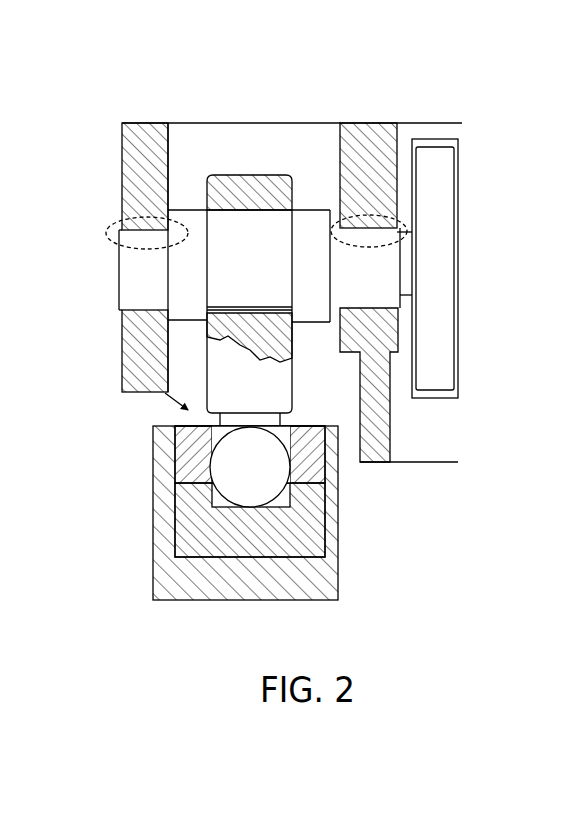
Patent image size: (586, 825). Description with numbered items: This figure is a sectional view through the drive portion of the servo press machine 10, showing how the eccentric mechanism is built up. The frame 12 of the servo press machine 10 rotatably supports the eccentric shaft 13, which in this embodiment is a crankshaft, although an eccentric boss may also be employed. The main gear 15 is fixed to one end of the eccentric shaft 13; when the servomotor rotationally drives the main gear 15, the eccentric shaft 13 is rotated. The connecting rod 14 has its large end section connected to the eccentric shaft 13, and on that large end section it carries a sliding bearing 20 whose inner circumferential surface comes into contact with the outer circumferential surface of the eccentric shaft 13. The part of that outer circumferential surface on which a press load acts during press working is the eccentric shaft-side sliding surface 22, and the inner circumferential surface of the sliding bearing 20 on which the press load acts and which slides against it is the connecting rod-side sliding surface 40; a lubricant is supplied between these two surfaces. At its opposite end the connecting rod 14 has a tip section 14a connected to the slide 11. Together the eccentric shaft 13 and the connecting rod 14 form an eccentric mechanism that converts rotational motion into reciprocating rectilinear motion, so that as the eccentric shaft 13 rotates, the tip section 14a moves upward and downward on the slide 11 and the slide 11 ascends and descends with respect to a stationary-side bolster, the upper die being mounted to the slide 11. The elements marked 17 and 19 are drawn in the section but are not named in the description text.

The servo press machine 10 is at (457, 93).
The slide 11 is at (338, 527).
The frame 12 is at (333, 127).
The eccentric shaft 13 is at (118, 256).
The connecting rod 14 is at (273, 386).
The tip section 14a is at (278, 463).
The main gear 15 is at (453, 228).
The holder 17 is at (153, 460).
The lower housing wall 19 is at (120, 356).
The sliding bearing 20 is at (290, 173).
The eccentric shaft-side sliding surface 22 is at (293, 336).
The connecting rod-side sliding surface 40 is at (238, 306).